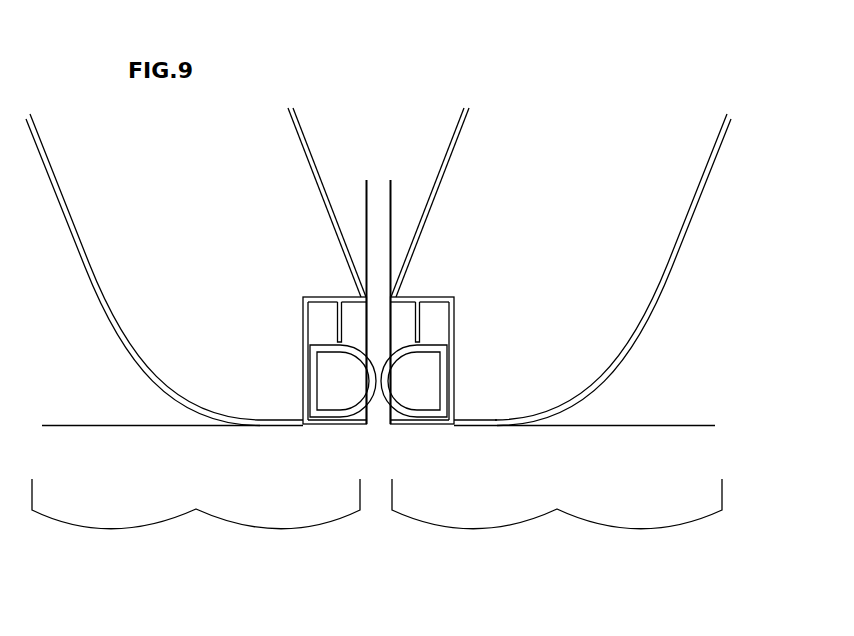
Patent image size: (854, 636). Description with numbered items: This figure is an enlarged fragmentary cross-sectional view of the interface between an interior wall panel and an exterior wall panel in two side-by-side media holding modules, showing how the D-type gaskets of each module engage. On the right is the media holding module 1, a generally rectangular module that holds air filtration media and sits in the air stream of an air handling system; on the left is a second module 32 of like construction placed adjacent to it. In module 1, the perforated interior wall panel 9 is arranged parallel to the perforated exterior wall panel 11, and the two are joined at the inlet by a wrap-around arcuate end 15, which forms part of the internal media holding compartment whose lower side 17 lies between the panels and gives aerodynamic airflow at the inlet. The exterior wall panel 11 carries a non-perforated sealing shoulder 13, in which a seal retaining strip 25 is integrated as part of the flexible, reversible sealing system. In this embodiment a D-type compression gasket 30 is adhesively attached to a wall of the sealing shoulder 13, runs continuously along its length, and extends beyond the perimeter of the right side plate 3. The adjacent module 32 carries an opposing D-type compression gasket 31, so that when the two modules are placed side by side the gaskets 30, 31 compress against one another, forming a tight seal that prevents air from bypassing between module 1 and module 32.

The media holding module 1 is at (557, 509).
The right side plate 3 is at (596, 407).
The interior wall panel 9 is at (693, 222).
The exterior wall panel 11 is at (447, 162).
The sealing shoulder 13 is at (380, 348).
The arcuate end 15 is at (610, 365).
The lower side 17 is at (483, 383).
The seal retaining strip 25 is at (418, 318).
The D-type compression gasket 30 is at (424, 417).
The opposing D-type compression gasket 31 is at (328, 417).
The second module 32 is at (196, 509).